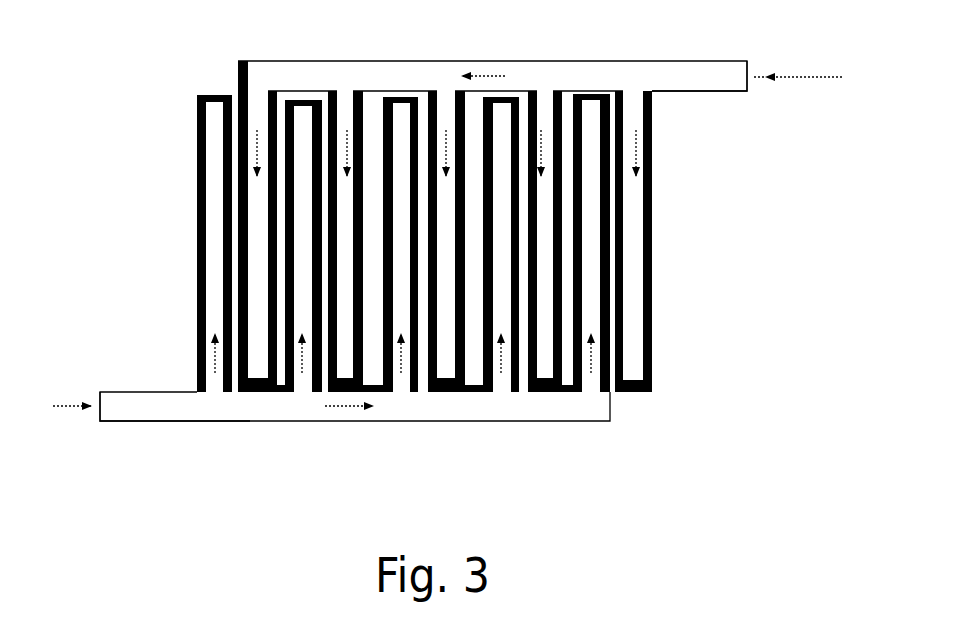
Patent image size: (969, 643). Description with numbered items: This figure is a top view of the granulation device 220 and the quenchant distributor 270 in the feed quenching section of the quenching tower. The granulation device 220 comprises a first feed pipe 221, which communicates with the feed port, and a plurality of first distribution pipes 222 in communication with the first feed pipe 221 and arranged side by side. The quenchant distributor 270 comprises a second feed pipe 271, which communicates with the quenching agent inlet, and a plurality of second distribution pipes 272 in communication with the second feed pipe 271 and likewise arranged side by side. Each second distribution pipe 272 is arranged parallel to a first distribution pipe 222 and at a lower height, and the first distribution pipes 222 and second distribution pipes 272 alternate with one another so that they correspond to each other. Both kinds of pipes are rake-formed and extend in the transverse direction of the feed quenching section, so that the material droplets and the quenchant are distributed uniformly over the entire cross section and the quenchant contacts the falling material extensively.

The granulation device 220 is at (356, 454).
The first feed pipe 221 is at (250, 423).
The first distribution pipe 222 is at (197, 248).
The quenchant distributor 270 is at (632, 50).
The second feed pipe 271 is at (687, 93).
The second distribution pipe 272 is at (652, 287).